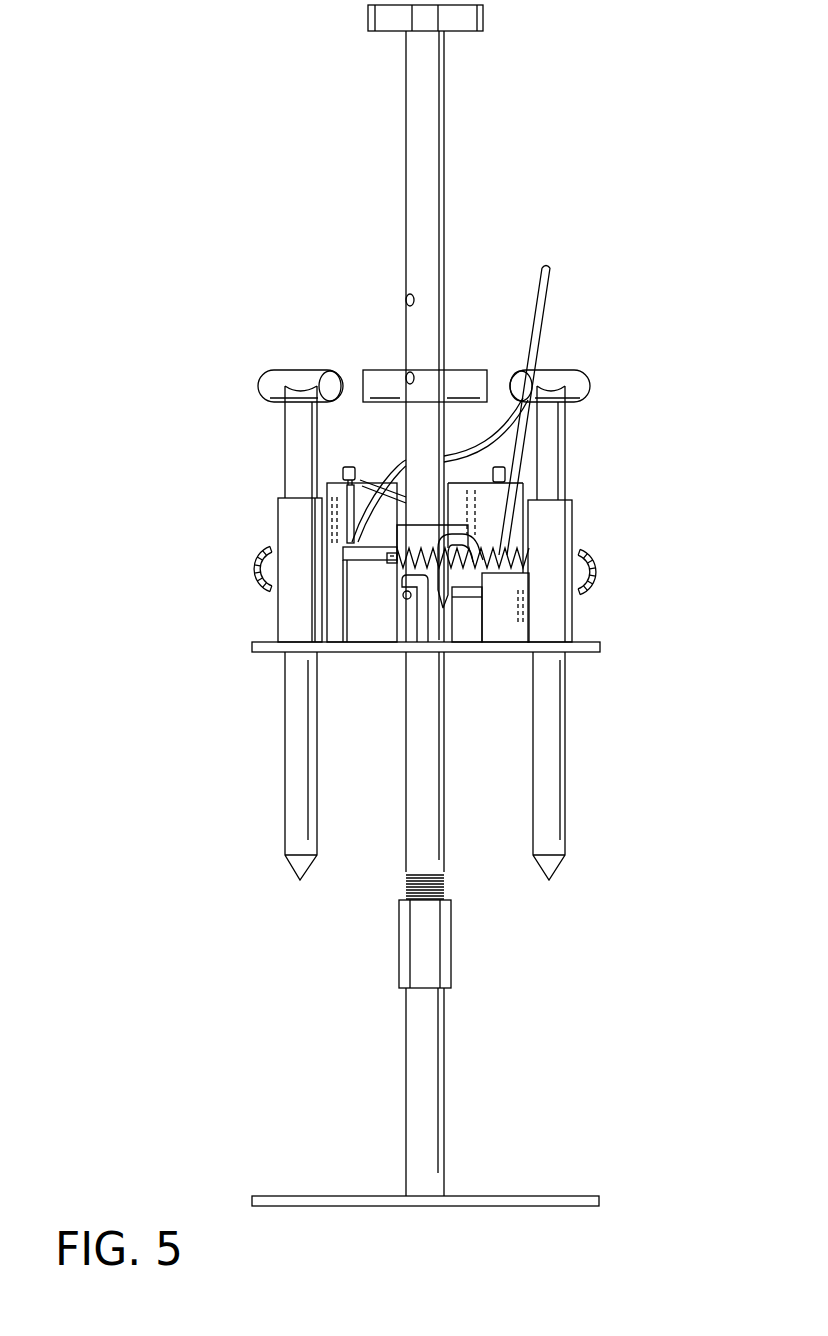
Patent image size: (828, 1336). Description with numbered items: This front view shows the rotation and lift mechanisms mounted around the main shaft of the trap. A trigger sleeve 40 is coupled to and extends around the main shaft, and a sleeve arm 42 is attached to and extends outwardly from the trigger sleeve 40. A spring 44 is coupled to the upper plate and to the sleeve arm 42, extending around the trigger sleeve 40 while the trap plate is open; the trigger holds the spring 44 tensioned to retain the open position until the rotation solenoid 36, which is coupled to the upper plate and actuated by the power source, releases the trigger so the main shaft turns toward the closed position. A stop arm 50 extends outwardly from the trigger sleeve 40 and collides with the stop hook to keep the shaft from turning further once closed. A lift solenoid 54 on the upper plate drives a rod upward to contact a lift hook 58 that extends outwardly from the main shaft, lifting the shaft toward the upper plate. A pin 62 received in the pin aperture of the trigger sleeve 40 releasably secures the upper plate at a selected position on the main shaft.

The rotation solenoid 36 is at (505, 592).
The trigger sleeve 40 is at (427, 533).
The sleeve arm 42 is at (387, 558).
The spring 44 is at (493, 548).
The stop arm 50 is at (403, 597).
The lift solenoid 54 is at (363, 584).
The lift hook 58 is at (390, 535).
The pin 62 is at (467, 593).